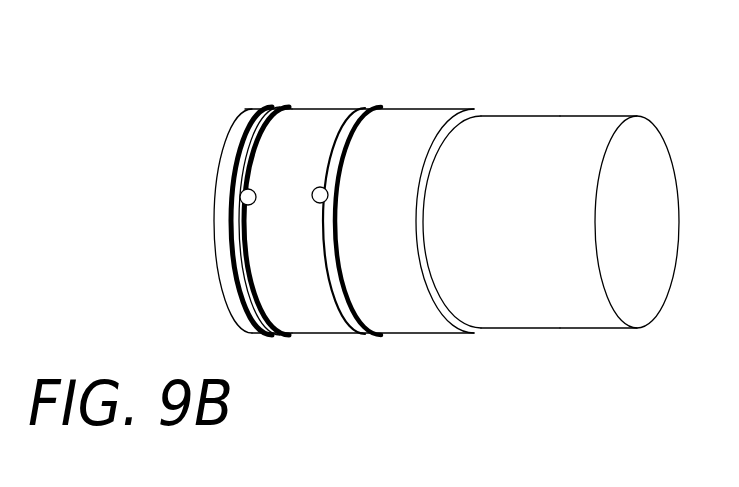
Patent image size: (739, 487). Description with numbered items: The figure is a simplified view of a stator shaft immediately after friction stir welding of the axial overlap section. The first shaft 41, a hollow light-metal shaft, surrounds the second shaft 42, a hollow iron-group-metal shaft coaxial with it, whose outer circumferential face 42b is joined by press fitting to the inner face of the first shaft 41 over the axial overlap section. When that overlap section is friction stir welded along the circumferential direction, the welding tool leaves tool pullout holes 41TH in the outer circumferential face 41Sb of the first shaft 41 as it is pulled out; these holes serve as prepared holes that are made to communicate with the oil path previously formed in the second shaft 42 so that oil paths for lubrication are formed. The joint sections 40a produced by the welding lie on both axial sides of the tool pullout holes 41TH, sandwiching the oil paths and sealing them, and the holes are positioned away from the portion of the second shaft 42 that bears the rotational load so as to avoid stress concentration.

The first shaft 41 is at (413, 100).
The outer circumferential face of the first shaft 41Sb is at (312, 122).
The joint section 40a is at (229, 226).
The tool pullout hole 41TH is at (253, 191).
The second shaft 42 is at (515, 100).
The outer circumferential face of the second shaft 42b is at (585, 128).